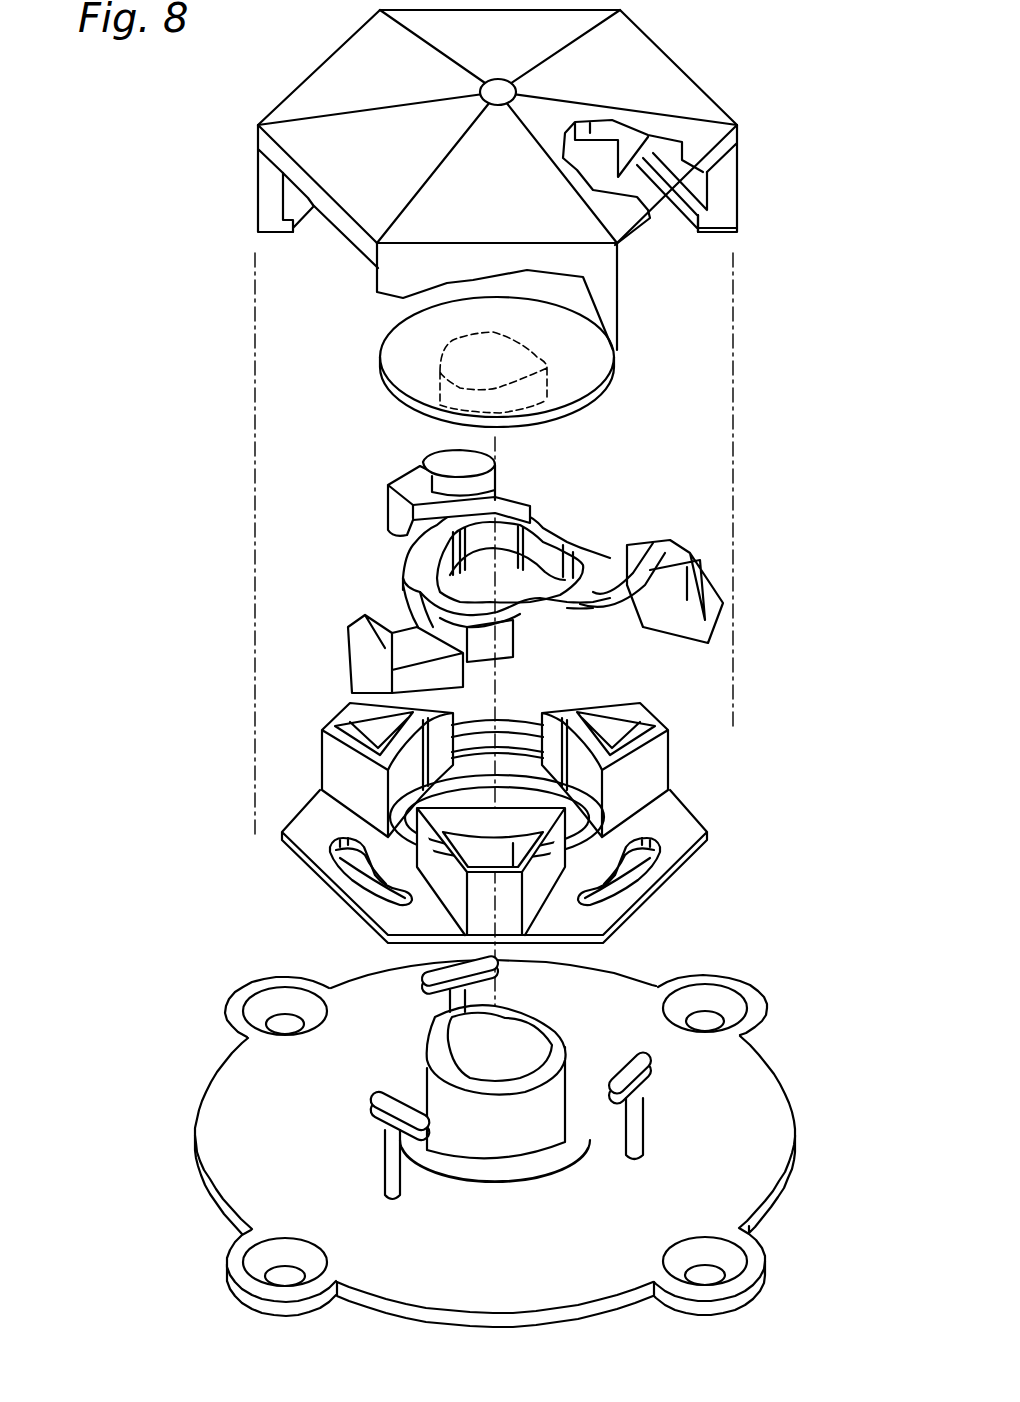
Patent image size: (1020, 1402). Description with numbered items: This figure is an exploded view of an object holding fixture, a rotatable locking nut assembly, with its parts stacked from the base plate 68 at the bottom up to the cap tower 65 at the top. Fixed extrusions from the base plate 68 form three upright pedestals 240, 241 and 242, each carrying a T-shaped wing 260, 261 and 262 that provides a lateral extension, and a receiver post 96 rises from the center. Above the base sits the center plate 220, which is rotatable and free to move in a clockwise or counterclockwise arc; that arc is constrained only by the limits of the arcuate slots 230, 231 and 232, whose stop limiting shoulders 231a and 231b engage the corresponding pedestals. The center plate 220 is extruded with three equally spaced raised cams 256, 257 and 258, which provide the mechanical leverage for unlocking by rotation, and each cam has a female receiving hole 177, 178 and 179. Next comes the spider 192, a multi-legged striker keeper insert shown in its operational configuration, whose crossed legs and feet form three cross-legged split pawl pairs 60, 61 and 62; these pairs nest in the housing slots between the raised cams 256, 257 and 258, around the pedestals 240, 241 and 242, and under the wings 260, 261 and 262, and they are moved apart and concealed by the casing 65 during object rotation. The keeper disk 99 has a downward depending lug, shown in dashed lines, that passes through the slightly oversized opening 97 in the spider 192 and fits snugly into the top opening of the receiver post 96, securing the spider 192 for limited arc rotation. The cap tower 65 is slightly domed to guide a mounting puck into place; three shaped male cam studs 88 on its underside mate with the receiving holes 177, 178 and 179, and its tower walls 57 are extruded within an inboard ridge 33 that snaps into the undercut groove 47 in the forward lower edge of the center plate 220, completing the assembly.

The inboard ridge 33 is at (283, 210).
The cap tower 65 is at (470, 180).
The male cam studs 88 is at (628, 163).
The tower wall 57 is at (603, 285).
The keeper disk 99 is at (400, 367).
The cross-legged pawl pair 61 is at (400, 452).
The opening 97 is at (533, 580).
The spider 192 is at (548, 555).
The cross-legged pawl pair 60 is at (348, 606).
The cross-legged pawl pair 62 is at (725, 584).
The arcuate slot 232 is at (505, 745).
The female receiving hole 177 is at (613, 730).
The female receiving hole 179 is at (348, 730).
The raised cam 258 is at (346, 758).
The raised cam 256 is at (642, 753).
The female receiving hole 178 is at (513, 845).
The center plate 220 is at (452, 823).
The stop limiting shoulder 231a is at (330, 863).
The arcuate slot 231 is at (310, 879).
The stop limiting shoulder 231b is at (367, 897).
The raised cam 257 is at (510, 865).
The arcuate slot 230 is at (623, 882).
The undercut groove 47 is at (427, 950).
The T-shaped wing 262 is at (485, 978).
The upright pedestal 242 is at (443, 1003).
The T-shaped wing 261 is at (370, 1108).
The T-shaped wing 260 is at (648, 1073).
The upright pedestal 240 is at (643, 1130).
The upright pedestal 241 is at (388, 1167).
The receiver post 96 is at (497, 1125).
The base plate 68 is at (518, 1141).